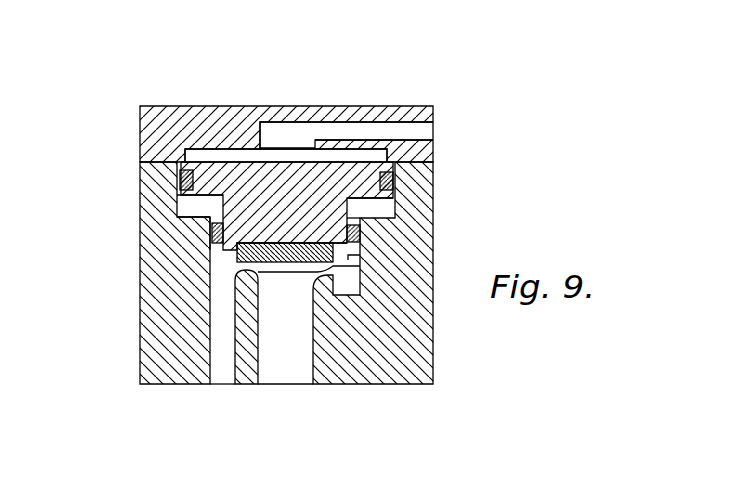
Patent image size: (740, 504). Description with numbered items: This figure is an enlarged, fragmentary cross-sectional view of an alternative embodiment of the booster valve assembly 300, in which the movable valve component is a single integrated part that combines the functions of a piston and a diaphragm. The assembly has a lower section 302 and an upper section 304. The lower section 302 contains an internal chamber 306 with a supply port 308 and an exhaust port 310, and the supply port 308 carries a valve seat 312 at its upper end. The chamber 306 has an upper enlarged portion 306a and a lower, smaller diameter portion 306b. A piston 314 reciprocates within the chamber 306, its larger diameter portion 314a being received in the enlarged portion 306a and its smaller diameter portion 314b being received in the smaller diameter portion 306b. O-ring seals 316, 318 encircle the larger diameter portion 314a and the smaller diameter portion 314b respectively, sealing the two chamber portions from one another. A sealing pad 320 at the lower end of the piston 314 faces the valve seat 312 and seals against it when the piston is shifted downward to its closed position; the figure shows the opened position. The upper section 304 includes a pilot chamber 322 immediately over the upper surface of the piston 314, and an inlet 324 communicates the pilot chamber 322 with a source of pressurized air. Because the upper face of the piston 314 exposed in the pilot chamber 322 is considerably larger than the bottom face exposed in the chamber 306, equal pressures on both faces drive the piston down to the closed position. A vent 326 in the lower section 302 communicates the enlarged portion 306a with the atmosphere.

The booster valve assembly 300 is at (462, 102).
The lower section 302 is at (212, 246).
The upper section 304 is at (142, 140).
The internal chamber 306 is at (212, 250).
The upper enlarged portion 306a is at (180, 208).
The lower smaller diameter portion 306b is at (210, 235).
The supply port 308 is at (290, 372).
The exhaust port 310 is at (222, 375).
The valve seat 312 is at (340, 258).
The piston 314 is at (213, 172).
The larger diameter portion 314a is at (358, 197).
The smaller diameter portion 314b is at (345, 238).
The O-ring seal 316 is at (394, 178).
The O-ring seal 318 is at (362, 241).
The sealing pad 320 is at (270, 267).
The pilot chamber 322 is at (240, 153).
The inlet 324 is at (375, 128).
The vent 326 is at (362, 231).